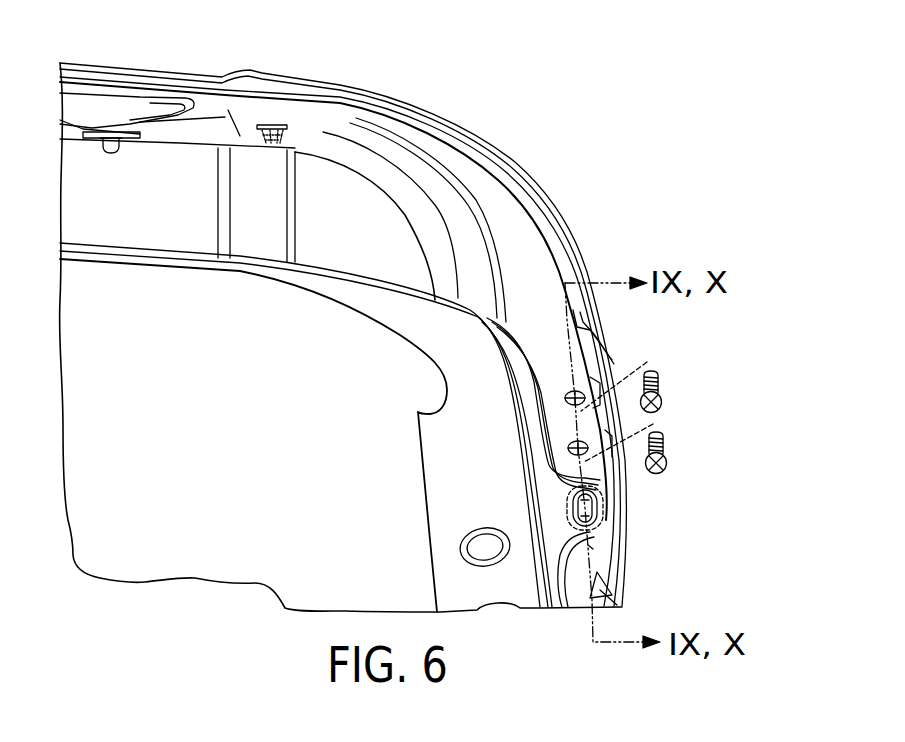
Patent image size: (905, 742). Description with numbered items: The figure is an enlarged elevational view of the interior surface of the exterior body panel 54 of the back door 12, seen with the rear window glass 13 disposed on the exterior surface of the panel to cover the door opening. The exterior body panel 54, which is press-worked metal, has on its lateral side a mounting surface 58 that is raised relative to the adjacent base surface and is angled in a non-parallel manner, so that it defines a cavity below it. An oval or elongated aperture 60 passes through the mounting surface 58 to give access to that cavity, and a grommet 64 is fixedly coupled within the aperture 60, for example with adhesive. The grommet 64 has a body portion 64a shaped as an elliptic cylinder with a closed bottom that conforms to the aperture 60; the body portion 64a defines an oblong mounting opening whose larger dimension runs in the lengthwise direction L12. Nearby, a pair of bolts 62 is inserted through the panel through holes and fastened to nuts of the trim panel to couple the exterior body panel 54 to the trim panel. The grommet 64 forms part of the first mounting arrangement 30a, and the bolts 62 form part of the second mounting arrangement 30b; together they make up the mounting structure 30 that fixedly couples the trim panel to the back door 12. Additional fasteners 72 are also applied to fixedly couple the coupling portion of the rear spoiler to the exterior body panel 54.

The back door 12 is at (530, 162).
The rear window glass 13 is at (207, 530).
The mounting structure 30 is at (824, 415).
The first mounting arrangement 30a is at (718, 499).
The second mounting arrangement 30b is at (738, 408).
The exterior body panel 54 is at (515, 237).
The mounting surface 58 is at (565, 590).
The aperture 60 is at (563, 503).
The bolts 62 is at (665, 450).
The grommet 64 is at (635, 514).
The body portion 64a is at (590, 507).
The additional fasteners 72 is at (117, 130).
The lengthwise direction L12 is at (590, 547).